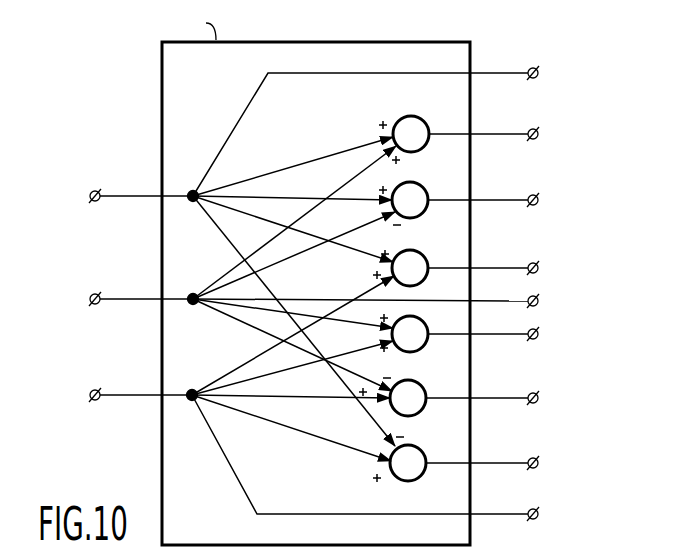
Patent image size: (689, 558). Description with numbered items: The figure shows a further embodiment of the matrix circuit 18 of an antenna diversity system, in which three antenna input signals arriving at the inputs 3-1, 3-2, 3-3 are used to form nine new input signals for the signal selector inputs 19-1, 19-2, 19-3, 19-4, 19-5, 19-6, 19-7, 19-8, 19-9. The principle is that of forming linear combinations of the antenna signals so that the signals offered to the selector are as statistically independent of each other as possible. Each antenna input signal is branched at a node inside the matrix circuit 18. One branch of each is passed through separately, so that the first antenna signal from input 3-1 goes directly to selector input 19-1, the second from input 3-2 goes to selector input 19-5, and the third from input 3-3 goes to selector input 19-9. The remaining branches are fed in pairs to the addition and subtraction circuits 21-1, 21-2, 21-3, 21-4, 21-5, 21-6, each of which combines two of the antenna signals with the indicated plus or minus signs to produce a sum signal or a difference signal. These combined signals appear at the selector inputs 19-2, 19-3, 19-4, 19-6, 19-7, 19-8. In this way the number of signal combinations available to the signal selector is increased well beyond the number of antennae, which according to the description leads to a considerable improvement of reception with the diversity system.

The matrix circuit 18 is at (301, 41).
The antenna input 3-1 is at (88, 193).
The antenna input 3-2 is at (88, 296).
The antenna input 3-3 is at (88, 392).
The signal selector input 19-1 is at (543, 75).
The signal selector input 19-2 is at (543, 136).
The signal selector input 19-3 is at (543, 202).
The signal selector input 19-4 is at (543, 270).
The signal selector input 19-5 is at (543, 303).
The signal selector input 19-6 is at (543, 336).
The signal selector input 19-7 is at (543, 400).
The signal selector input 19-8 is at (543, 465).
The signal selector input 19-9 is at (543, 516).
The addition and subtraction circuit 21-1 is at (438, 106).
The addition and subtraction circuit 21-2 is at (432, 184).
The addition and subtraction circuit 21-3 is at (435, 250).
The addition and subtraction circuit 21-4 is at (444, 326).
The addition and subtraction circuit 21-5 is at (440, 378).
The addition and subtraction circuit 21-6 is at (440, 444).